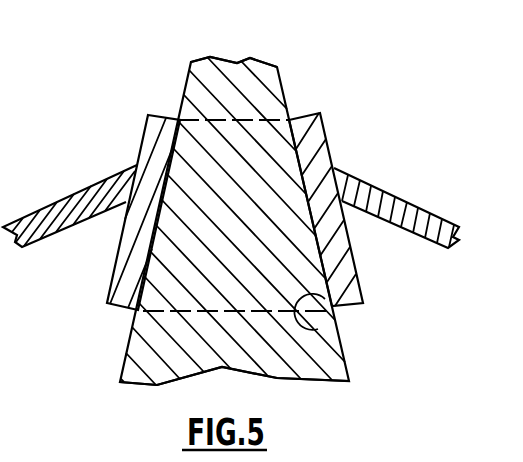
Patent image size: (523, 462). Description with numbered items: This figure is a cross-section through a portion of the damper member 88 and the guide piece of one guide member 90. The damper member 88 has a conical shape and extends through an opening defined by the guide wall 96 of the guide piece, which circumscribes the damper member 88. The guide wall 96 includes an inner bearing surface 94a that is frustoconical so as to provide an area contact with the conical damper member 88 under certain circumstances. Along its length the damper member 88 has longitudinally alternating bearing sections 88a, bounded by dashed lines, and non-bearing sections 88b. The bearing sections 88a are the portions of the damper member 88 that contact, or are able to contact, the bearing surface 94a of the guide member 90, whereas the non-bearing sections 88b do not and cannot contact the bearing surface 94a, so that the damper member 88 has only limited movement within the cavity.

The damper member 88 is at (290, 90).
The bearing sections 88a is at (275, 180).
The non-bearing sections 88b is at (208, 78).
The guide member 90 is at (363, 162).
The inner bearing surface 94a is at (318, 329).
The guide wall 96 is at (113, 264).